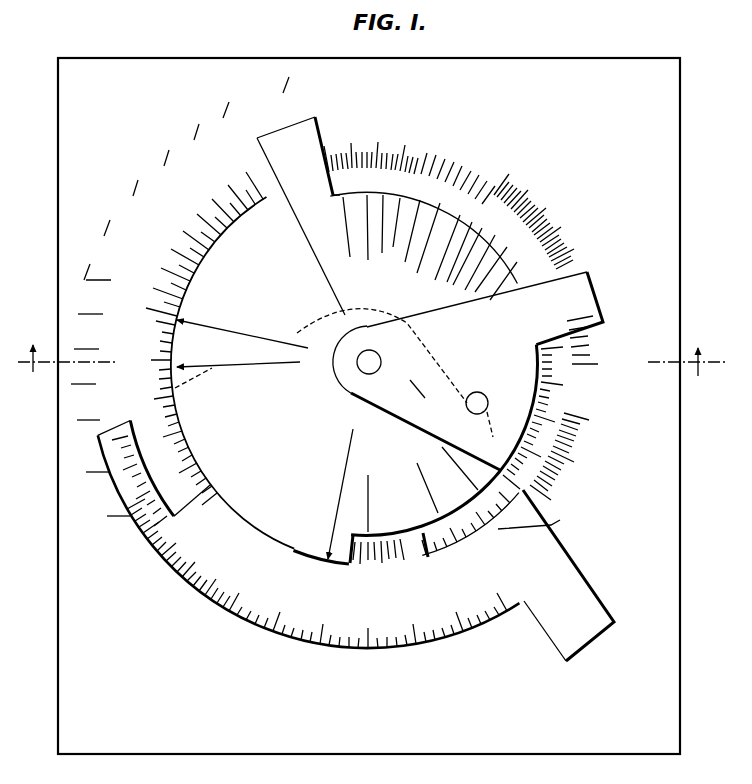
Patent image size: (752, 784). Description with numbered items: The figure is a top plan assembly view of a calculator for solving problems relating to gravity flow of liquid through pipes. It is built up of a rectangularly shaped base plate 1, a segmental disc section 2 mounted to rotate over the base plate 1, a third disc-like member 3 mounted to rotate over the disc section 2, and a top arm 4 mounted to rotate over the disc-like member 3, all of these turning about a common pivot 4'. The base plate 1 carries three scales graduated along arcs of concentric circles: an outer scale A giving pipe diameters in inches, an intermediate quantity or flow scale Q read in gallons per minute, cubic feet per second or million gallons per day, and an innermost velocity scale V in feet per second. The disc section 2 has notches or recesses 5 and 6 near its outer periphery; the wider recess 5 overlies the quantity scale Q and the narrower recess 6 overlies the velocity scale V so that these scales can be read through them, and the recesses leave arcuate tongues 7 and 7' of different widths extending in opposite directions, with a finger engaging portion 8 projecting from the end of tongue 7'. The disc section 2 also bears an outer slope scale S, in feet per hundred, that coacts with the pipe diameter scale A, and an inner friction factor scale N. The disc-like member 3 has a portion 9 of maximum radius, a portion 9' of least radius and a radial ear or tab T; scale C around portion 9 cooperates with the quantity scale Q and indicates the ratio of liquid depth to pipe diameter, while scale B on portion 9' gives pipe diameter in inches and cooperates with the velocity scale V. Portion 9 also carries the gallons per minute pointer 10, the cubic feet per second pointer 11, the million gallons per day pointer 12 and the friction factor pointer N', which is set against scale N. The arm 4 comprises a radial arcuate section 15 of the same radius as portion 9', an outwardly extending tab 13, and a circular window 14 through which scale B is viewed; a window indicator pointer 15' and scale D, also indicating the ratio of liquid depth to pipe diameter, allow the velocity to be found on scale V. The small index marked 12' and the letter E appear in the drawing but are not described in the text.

The base plate 1 is at (678, 236).
The segmental disc section 2 is at (233, 574).
The disc-like member 3 is at (236, 361).
The top arm 4 is at (422, 437).
The common pivot 4' is at (340, 376).
The recess 5 is at (140, 452).
The recess 6 is at (446, 552).
The arcuate tongue 7 is at (74, 441).
The arcuate tongue 7' is at (536, 515).
The finger engaging portion 8 is at (586, 597).
The portion of maximum radius 9 is at (182, 477).
The portion of least radius 9' is at (337, 147).
The gallons per minute pointer 10 is at (330, 291).
The cubic feet per second pointer 11 is at (298, 336).
The million gallons per day pointer 12 is at (258, 353).
The index circle 12' is at (477, 403).
The radial ear or tab 13 is at (583, 294).
The circular aperture or window 14 is at (516, 375).
The radial arcuate section 15 is at (395, 370).
The window indicator pointer 15' is at (421, 382).
The outer scale A is at (160, 158).
The pipe diameter scale B is at (492, 283).
The ratio scale C is at (212, 282).
The ratio scale D is at (499, 361).
The scale E is at (196, 377).
The friction factor scale N is at (393, 530).
The friction factor pointer N' is at (324, 493).
The quantity scale Q is at (527, 212).
The slope scale S is at (469, 632).
The ear or tab T is at (305, 118).
The velocity scale V is at (480, 216).